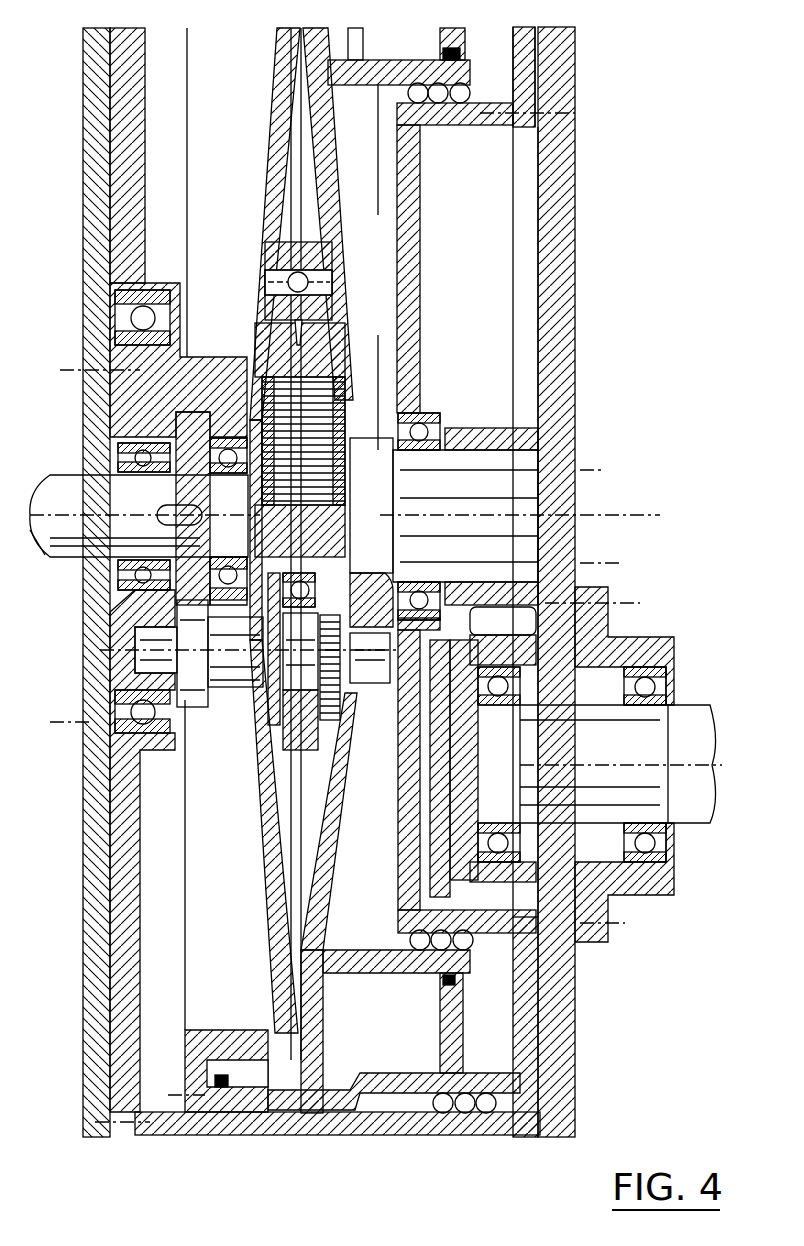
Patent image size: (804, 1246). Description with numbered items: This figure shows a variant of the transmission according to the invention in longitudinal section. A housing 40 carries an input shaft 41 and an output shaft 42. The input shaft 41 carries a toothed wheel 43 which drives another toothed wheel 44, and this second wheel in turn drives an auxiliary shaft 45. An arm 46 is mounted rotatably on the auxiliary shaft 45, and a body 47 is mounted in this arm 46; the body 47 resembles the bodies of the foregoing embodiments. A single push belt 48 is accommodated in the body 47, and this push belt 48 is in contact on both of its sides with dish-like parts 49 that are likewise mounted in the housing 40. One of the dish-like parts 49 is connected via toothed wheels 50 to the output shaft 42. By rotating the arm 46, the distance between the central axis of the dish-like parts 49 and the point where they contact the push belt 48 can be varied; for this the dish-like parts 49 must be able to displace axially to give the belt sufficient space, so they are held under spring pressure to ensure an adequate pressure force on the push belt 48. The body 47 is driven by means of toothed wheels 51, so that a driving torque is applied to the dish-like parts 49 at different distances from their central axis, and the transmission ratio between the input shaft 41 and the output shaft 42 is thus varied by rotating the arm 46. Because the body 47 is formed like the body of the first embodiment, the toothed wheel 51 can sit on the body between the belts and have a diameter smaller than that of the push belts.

The housing 40 is at (100, 152).
The input shaft 41 is at (55, 490).
The output shaft 42 is at (682, 724).
The toothed wheel 43 is at (192, 412).
The toothed wheel 44 is at (196, 710).
The auxiliary shaft 45 is at (240, 668).
The arm 46 is at (265, 262).
The body 47 is at (312, 295).
The push belt 48 is at (325, 350).
The dish-like parts 49 is at (272, 132).
The toothed wheels 50 is at (405, 882).
The toothed wheels 51 is at (335, 575).